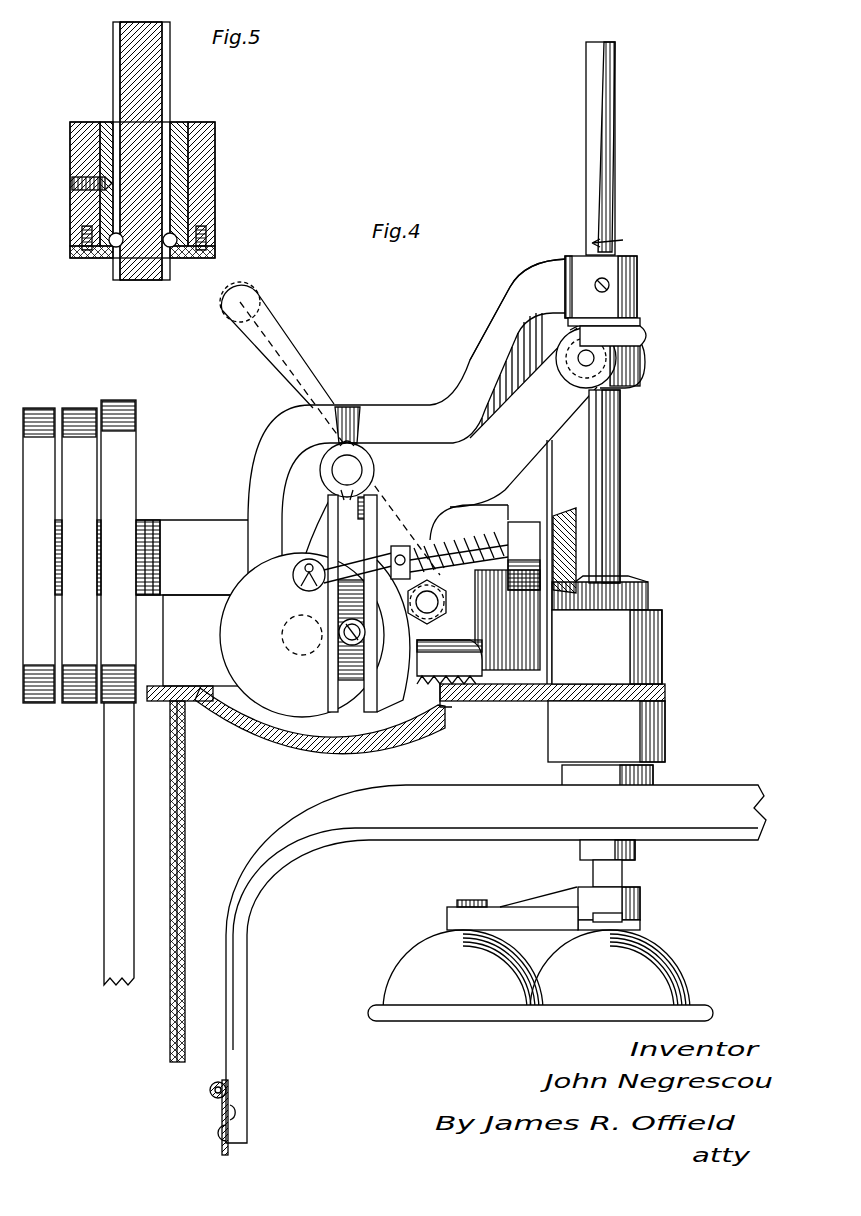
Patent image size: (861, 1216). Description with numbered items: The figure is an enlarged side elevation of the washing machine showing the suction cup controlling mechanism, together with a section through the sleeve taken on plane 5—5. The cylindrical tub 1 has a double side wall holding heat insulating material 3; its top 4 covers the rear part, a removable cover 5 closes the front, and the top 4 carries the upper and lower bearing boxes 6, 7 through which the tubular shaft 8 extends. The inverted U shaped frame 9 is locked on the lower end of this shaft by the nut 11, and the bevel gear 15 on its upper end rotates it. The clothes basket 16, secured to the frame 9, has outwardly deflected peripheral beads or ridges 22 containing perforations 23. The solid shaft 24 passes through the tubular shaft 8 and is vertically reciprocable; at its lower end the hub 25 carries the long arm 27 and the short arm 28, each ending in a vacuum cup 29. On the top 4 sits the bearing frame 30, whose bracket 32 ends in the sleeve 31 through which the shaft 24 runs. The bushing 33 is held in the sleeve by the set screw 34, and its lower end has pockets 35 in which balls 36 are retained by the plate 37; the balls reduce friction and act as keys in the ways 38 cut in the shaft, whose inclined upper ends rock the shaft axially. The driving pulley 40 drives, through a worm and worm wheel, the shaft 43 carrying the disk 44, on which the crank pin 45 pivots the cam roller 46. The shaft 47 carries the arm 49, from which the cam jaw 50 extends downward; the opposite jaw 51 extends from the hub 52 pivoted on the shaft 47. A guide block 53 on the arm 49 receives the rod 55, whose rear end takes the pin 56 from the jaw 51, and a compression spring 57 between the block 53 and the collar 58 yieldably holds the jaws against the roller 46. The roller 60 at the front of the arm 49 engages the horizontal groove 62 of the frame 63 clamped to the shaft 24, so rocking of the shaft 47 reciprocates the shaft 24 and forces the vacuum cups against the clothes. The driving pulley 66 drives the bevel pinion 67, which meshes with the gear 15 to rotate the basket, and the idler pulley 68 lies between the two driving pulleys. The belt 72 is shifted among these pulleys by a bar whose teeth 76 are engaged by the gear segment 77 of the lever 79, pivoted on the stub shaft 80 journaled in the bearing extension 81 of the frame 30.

In FIG. 4, the cylindrical tub 1 is at (186, 872).
In FIG. 4, the heat insulating material 3 is at (180, 936).
In FIG. 4, the top 4 is at (406, 706).
In FIG. 4, the removable cover 5 is at (605, 277).
In FIG. 4, the upper bearing box 6 is at (657, 650).
In FIG. 4, the lower bearing box 7 is at (665, 722).
In FIG. 4, the tubular shaft 8 is at (614, 765).
In FIG. 4, the inverted U shaped frame 9 is at (388, 830).
In FIG. 4, the nut 11 is at (636, 852).
In FIG. 4, the bevel gear 15 is at (648, 592).
In FIG. 4, the clothes basket 16 is at (220, 1152).
In FIG. 4, the peripheral beads or ridges 22 is at (214, 1122).
In FIG. 4, the perforations 23 is at (215, 1136).
In FIG. 5, the solid shaft 24 is at (143, 270).
In FIG. 4, the solid shaft 24 is at (586, 152).
In FIG. 4, the hub 25 is at (641, 894).
In FIG. 4, the long arm 27 is at (641, 922).
In FIG. 4, the short arm 28 is at (447, 920).
In FIG. 4, the vacuum cup 29 is at (510, 1020).
In FIG. 4, the bearing frame 30 is at (396, 430).
In FIG. 5, the sleeve 31 is at (214, 162).
In FIG. 4, the sleeve 31 is at (637, 274).
In FIG. 4, the bracket 32 is at (520, 292).
In FIG. 5, the bushing 33 is at (190, 202).
In FIG. 5, the set screw 34 is at (76, 180).
In FIG. 4, the set screw 34 is at (609, 287).
In FIG. 5, the pockets 35 is at (90, 252).
In FIG. 5, the balls 36 is at (176, 226).
In FIG. 5, the plate 37 is at (75, 255).
In FIG. 4, the plate 37 is at (640, 322).
In FIG. 5, the ways 38 is at (113, 85).
In FIG. 4, the ways 38 is at (608, 148).
In FIG. 4, the driving pulley 40 is at (110, 704).
In FIG. 4, the shaft 43 is at (285, 640).
In FIG. 4, the disk 44 is at (302, 635).
In FIG. 4, the crank pin 45 is at (366, 634).
In FIG. 4, the cam roller 46 is at (373, 588).
In FIG. 4, the shaft 47 is at (362, 470).
In FIG. 4, the arm 49 is at (523, 417).
In FIG. 4, the cam jaw 50 is at (388, 690).
In FIG. 4, the jaw 51 is at (312, 680).
In FIG. 4, the hub 52 is at (360, 406).
In FIG. 4, the guide block 53 is at (397, 530).
In FIG. 4, the rod 55 is at (354, 562).
In FIG. 4, the pin 56 is at (296, 582).
In FIG. 4, the compression spring 57 is at (452, 540).
In FIG. 4, the collar 58 is at (530, 525).
In FIG. 4, the roller 60 is at (570, 378).
In FIG. 4, the horizontal groove 62 is at (622, 362).
In FIG. 4, the frame 63 is at (652, 338).
In FIG. 4, the driving pulley 66 is at (38, 704).
In FIG. 4, the bevel pinion 67 is at (578, 528).
In FIG. 4, the idler pulley 68 is at (76, 704).
In FIG. 4, the belt 72 is at (104, 905).
In FIG. 4, the teeth 76 is at (465, 700).
In FIG. 4, the gear segment 77 is at (484, 654).
In FIG. 4, the lever 79 is at (270, 318).
In FIG. 4, the stub shaft 80 is at (447, 602).
In FIG. 4, the bearing extension 81 is at (465, 622).